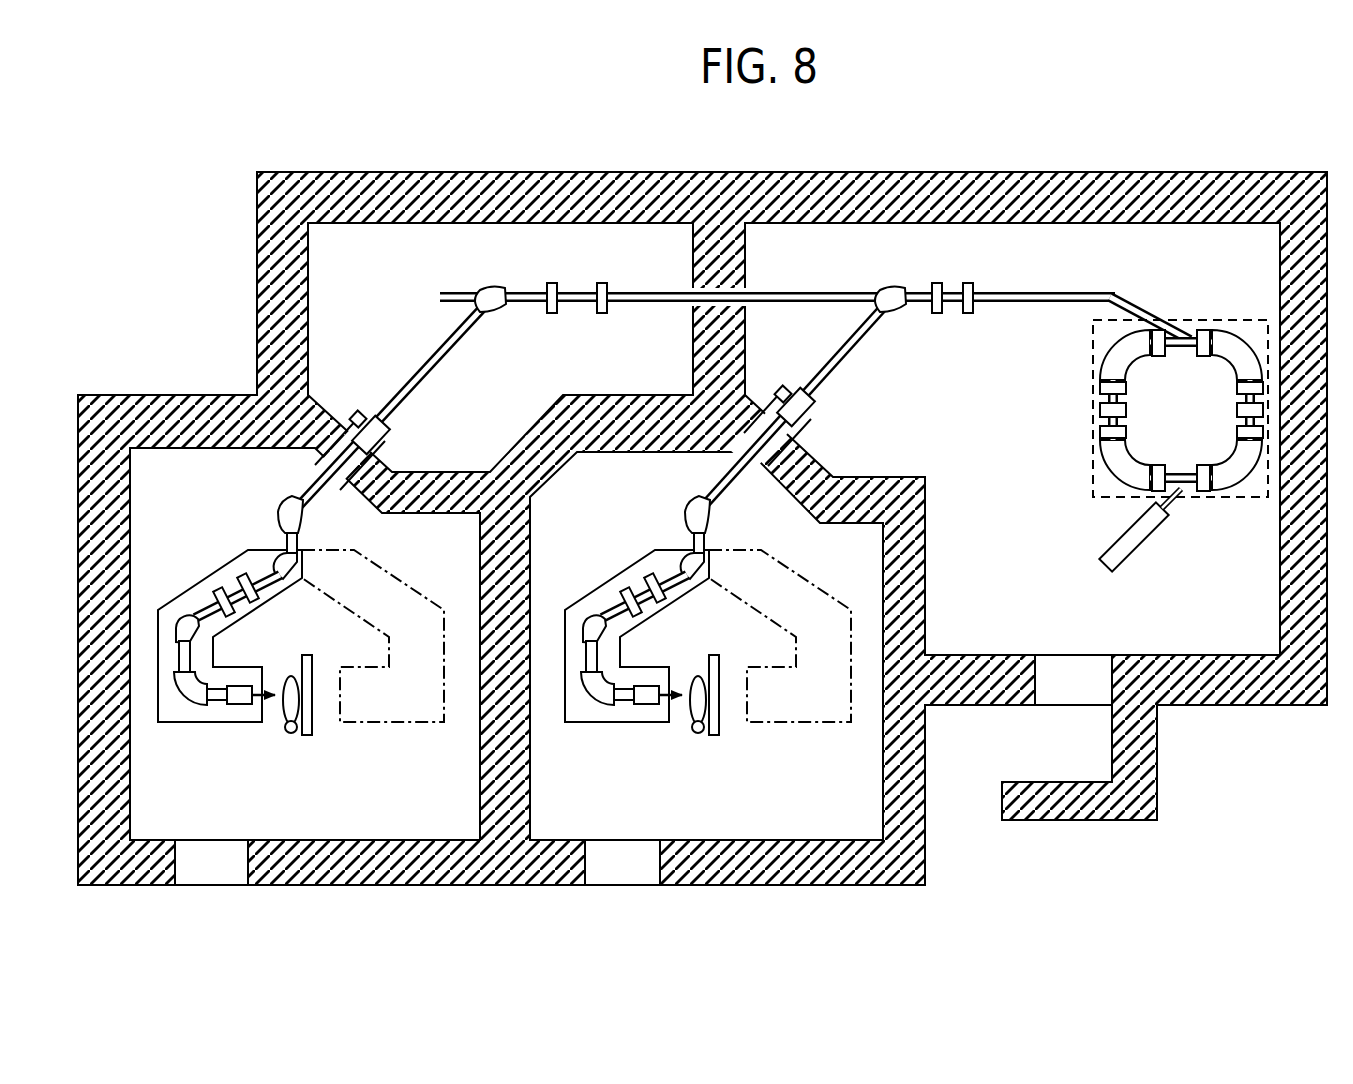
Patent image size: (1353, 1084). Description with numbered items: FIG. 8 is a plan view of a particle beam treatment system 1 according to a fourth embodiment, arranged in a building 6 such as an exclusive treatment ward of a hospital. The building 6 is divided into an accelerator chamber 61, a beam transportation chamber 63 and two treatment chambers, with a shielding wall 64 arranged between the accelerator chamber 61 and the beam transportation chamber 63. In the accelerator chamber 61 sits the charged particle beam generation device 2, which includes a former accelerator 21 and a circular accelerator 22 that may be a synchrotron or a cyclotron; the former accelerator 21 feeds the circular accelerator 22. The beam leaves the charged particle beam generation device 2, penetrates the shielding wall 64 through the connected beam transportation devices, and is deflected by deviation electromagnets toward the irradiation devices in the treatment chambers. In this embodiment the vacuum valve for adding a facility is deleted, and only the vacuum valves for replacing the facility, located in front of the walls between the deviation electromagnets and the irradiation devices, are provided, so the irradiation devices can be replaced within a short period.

The particle beam treatment system 1 is at (1048, 435).
The charged particle beam generation device 2 is at (1234, 317).
The former accelerator 21 is at (1120, 553).
The circular accelerator 22 is at (1256, 497).
The building 6 is at (254, 348).
The accelerator chamber 61 is at (977, 606).
The beam transportation chamber 63 is at (345, 262).
The shielding wall 64 is at (720, 272).